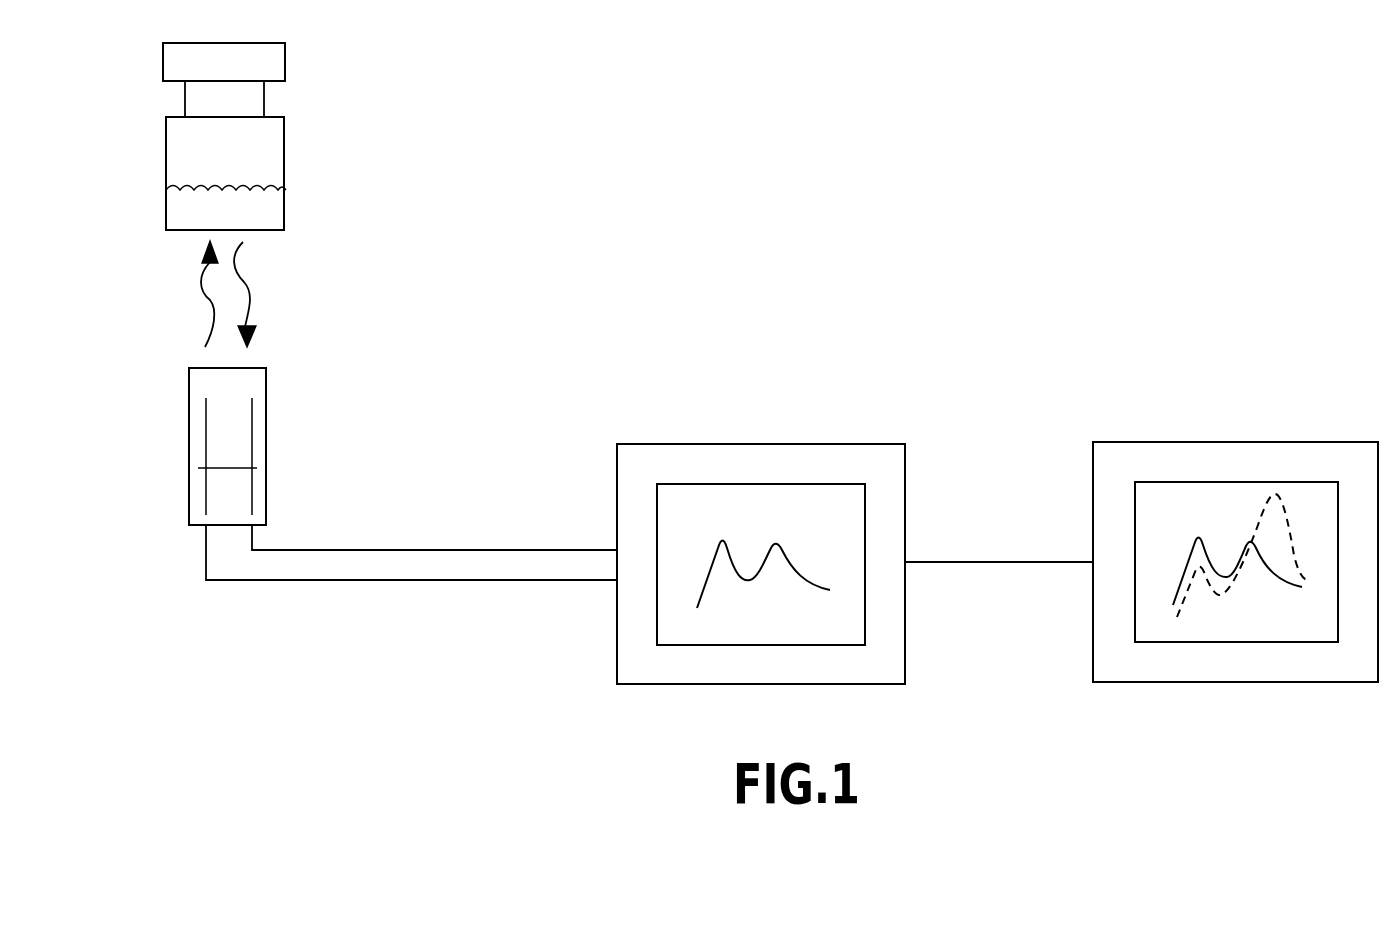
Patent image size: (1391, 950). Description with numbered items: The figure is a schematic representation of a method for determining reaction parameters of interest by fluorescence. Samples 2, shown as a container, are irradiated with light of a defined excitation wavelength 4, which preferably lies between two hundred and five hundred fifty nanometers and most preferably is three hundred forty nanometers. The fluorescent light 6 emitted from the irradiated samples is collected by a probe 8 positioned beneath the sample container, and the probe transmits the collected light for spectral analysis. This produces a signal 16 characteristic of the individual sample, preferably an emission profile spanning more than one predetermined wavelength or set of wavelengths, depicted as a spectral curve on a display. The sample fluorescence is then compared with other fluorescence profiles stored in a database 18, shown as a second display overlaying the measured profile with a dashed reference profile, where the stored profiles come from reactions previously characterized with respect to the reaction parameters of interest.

The samples 2 is at (285, 205).
The excitation wavelength 4 is at (202, 298).
The fluorescent light 6 is at (253, 285).
The probe 8 is at (266, 422).
The signal 16 is at (793, 560).
The database 18 is at (1267, 560).